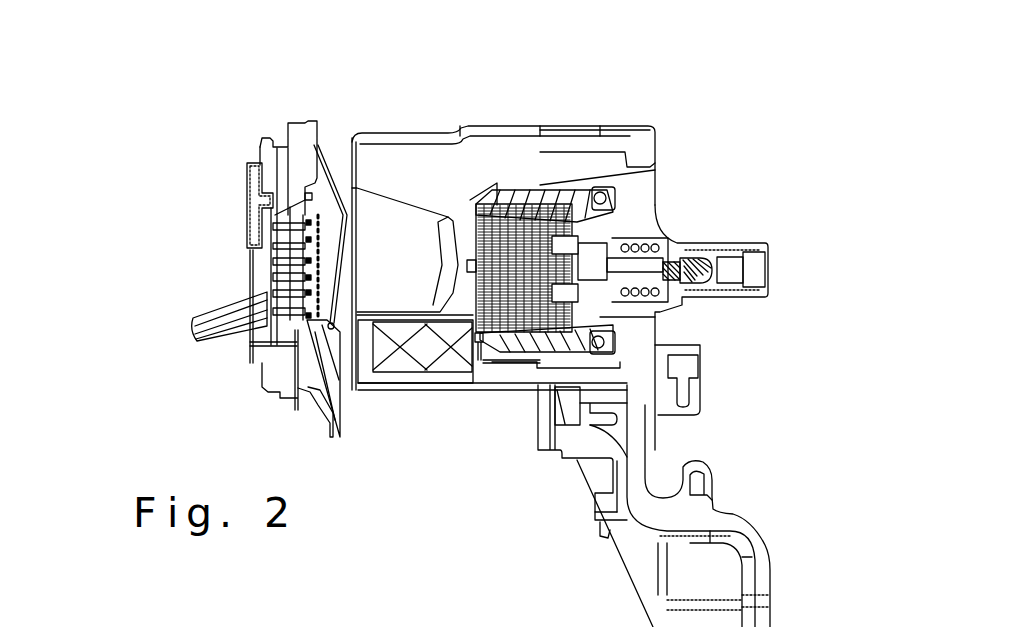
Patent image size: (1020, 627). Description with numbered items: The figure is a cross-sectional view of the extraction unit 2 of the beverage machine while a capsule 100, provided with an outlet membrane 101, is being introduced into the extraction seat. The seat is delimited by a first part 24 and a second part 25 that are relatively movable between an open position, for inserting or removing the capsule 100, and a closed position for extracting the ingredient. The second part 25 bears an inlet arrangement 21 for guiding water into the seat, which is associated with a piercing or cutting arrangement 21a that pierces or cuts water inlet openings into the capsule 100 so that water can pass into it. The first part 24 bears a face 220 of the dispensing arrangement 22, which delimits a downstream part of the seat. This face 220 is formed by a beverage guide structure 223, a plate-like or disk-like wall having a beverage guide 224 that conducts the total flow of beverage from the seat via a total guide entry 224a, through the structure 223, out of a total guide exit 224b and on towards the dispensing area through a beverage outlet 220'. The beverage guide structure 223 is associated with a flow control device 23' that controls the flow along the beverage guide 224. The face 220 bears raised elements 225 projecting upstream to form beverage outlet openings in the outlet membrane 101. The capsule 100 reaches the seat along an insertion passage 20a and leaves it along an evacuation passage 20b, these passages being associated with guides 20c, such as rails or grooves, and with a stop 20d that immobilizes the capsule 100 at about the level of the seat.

The extraction unit 2 is at (142, 106).
The un-extracted ingredient capsule insertion passage 20a is at (404, 136).
The extracted ingredient capsule evacuation passage 20b is at (410, 405).
The guides 20c is at (326, 165).
The stop 20d is at (333, 252).
The inlet arrangement 21 is at (748, 270).
The piercing or cutting arrangement 21a is at (587, 253).
The dispensing arrangement 22 is at (268, 262).
The flow control device 23' is at (242, 215).
The first part 24 is at (292, 148).
The second part 25 is at (530, 193).
The capsule 100 is at (430, 210).
The outlet membrane 101 is at (347, 198).
The face 220 is at (347, 269).
The beverage outlet 220' is at (175, 337).
The beverage guide structure 223 is at (295, 207).
The beverage guide 224 is at (335, 262).
The total guide entry 224a is at (305, 298).
The total guide exit 224b is at (290, 277).
The raised elements 225 is at (314, 282).